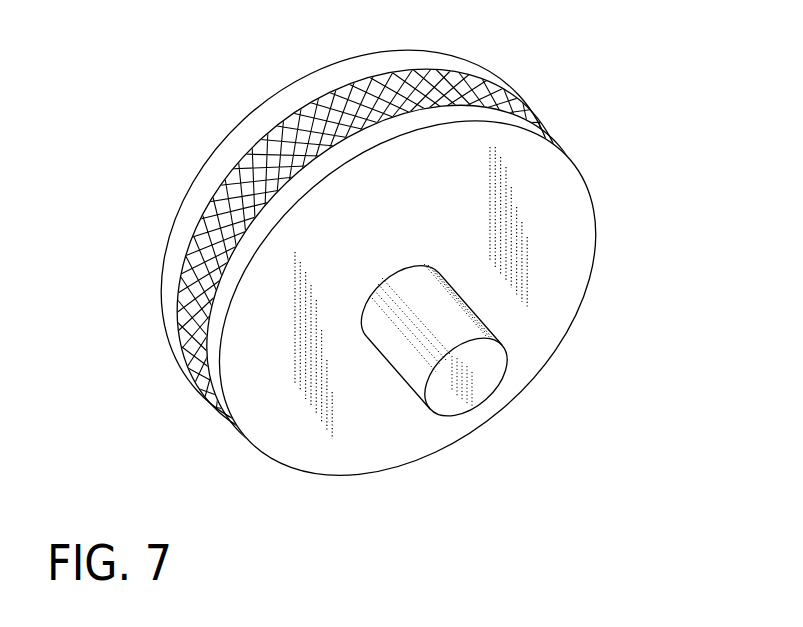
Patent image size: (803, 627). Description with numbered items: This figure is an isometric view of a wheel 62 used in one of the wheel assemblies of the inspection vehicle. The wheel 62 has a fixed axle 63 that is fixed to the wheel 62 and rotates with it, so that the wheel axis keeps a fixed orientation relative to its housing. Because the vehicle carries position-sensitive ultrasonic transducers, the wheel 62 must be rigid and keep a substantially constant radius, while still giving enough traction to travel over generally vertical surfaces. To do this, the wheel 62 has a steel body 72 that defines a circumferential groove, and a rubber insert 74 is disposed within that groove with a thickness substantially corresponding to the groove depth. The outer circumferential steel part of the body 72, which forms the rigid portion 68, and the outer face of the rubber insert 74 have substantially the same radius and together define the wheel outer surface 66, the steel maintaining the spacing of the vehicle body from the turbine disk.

The wheel 62 is at (383, 420).
The fixed axle 63 is at (477, 390).
The outer surface 66 is at (358, 102).
The rigid portion 68 is at (180, 225).
The steel body 72 is at (522, 335).
The rubber insert 74 is at (494, 100).